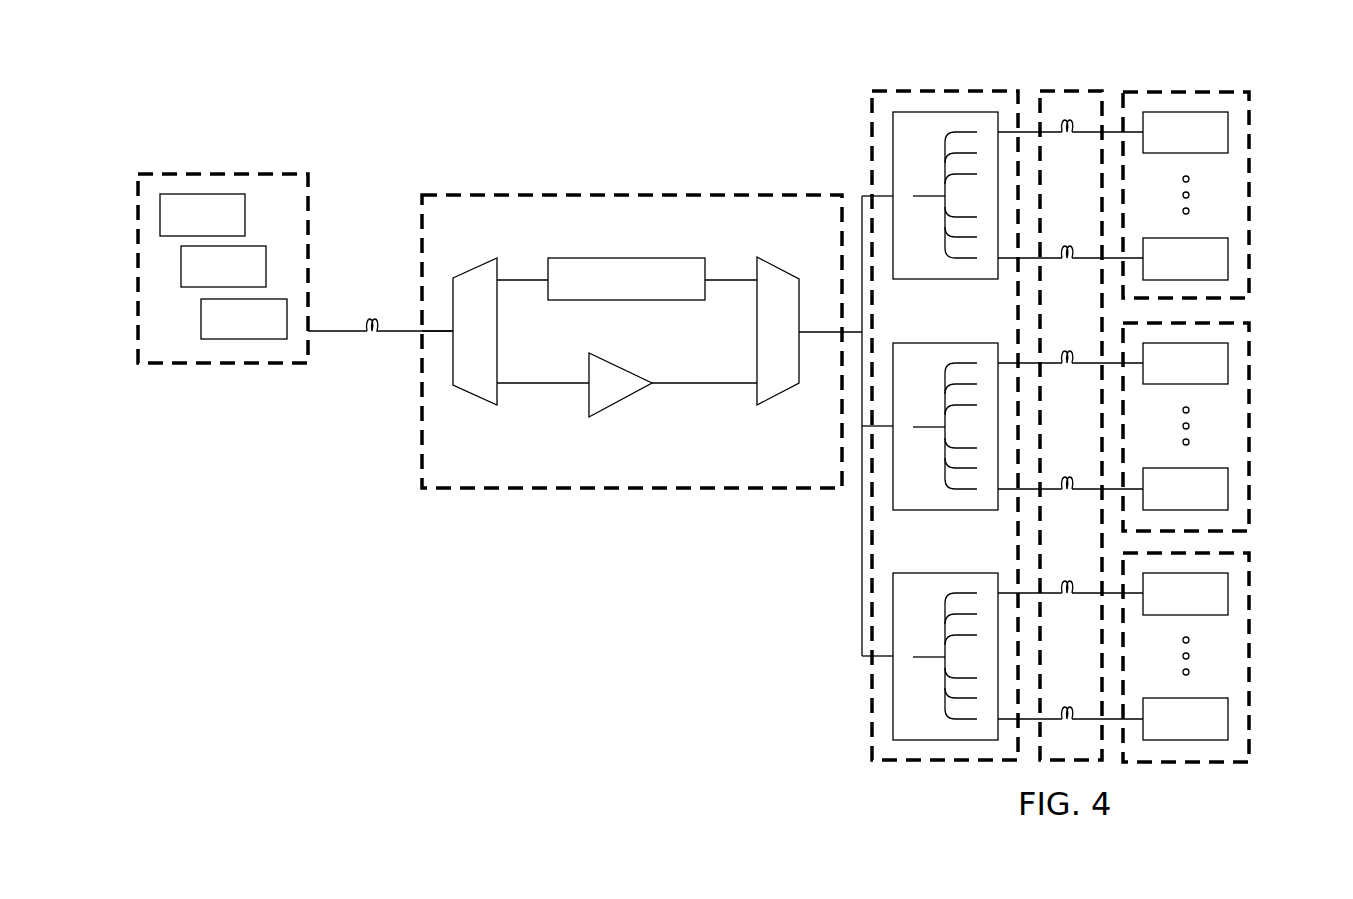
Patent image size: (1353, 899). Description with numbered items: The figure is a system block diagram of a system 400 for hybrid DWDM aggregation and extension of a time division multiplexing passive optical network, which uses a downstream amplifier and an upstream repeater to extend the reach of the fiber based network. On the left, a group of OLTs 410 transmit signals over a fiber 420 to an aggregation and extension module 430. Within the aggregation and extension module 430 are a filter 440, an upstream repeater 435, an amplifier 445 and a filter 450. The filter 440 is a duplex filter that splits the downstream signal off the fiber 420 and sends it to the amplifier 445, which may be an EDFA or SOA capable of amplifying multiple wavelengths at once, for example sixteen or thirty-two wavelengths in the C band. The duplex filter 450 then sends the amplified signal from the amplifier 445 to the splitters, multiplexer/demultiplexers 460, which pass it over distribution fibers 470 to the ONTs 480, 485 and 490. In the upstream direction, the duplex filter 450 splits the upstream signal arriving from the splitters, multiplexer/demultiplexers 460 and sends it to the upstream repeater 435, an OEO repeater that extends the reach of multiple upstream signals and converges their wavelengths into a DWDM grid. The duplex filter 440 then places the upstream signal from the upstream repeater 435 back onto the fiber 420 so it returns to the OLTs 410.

The system 400 is at (485, 644).
The OLTs 410 is at (221, 175).
The fiber 420 is at (369, 320).
The aggregation and extension module 430 is at (557, 488).
The upstream repeater 435 is at (625, 258).
The filter 440 is at (473, 396).
The amplifier 445 is at (623, 398).
The filter 450 is at (782, 394).
The splitters, multiplexer/demultiplexers 460 is at (933, 91).
The distribution optical fibers 470 is at (1070, 91).
The ONTs 480 is at (1249, 175).
The ONTs 485 is at (1249, 405).
The ONTs 490 is at (1249, 636).